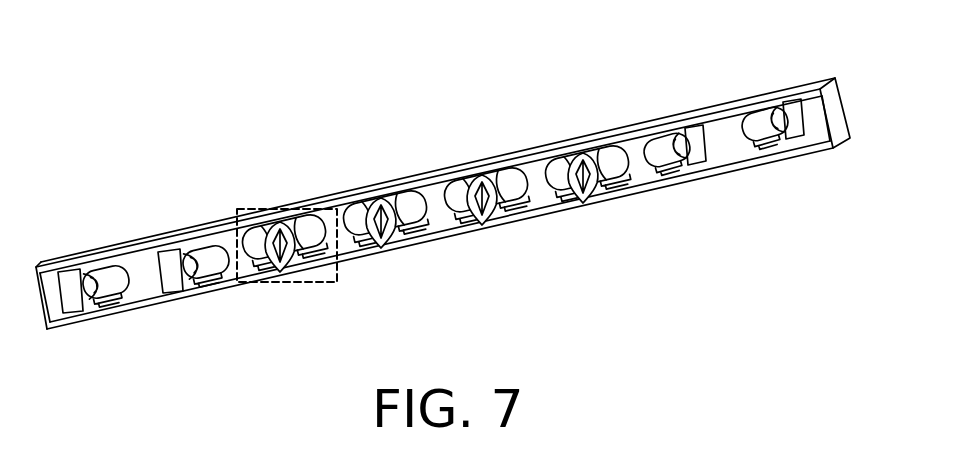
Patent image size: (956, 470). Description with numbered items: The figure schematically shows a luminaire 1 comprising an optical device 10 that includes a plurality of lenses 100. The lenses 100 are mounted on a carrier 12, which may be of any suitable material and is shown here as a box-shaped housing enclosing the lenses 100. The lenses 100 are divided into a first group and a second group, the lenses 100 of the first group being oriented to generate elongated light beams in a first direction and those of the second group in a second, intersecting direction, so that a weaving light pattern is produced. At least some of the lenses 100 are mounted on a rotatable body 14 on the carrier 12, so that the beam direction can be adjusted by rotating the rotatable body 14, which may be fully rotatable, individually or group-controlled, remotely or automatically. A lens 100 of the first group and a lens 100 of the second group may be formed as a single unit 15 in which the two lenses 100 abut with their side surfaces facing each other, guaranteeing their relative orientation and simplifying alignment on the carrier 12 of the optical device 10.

The luminaire 1 is at (113, 93).
The optical device 10 is at (632, 126).
The carrier 12 is at (430, 196).
The rotatable body 14 is at (64, 252).
The single unit 15 is at (252, 208).
The lens 100 is at (107, 284).